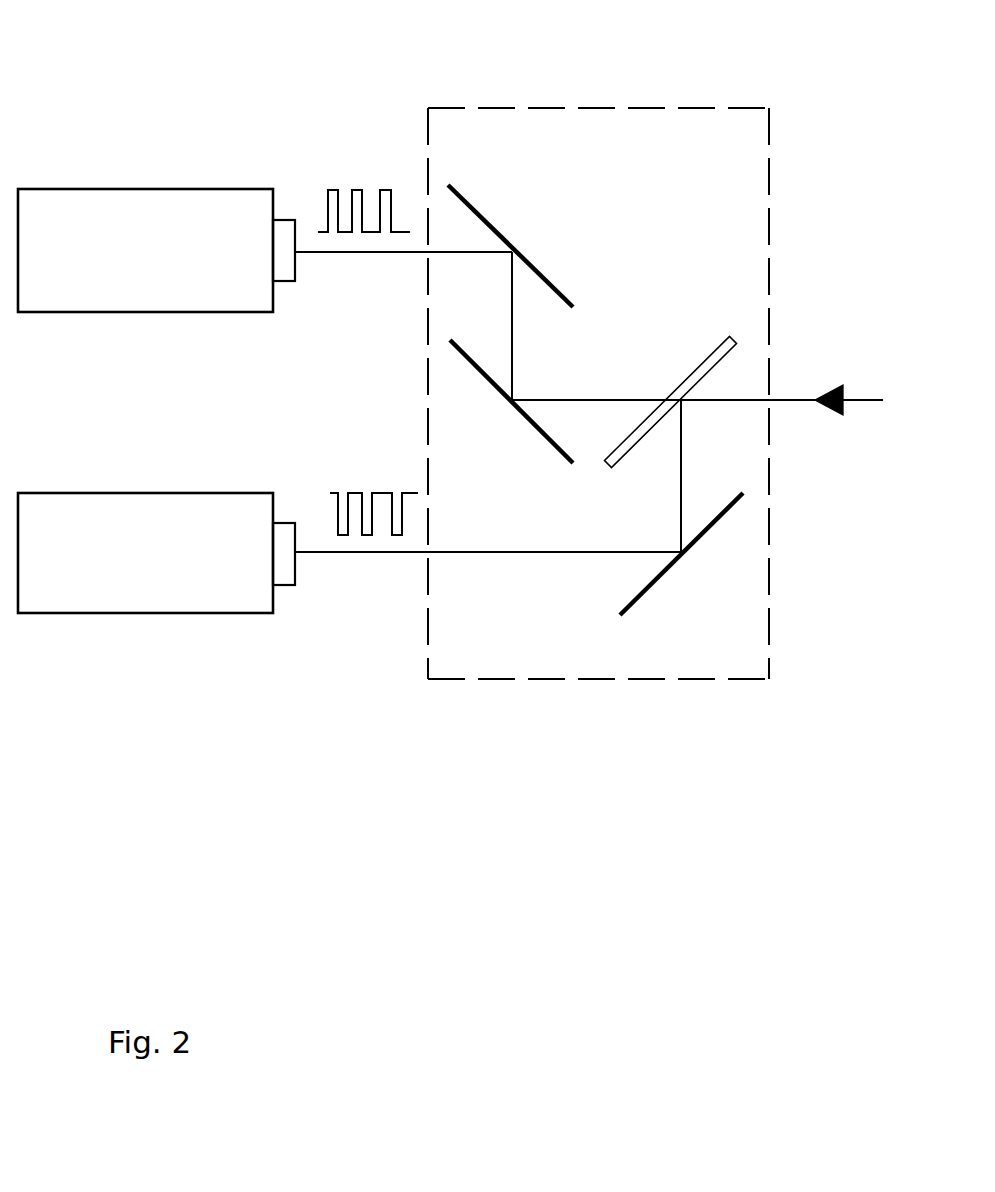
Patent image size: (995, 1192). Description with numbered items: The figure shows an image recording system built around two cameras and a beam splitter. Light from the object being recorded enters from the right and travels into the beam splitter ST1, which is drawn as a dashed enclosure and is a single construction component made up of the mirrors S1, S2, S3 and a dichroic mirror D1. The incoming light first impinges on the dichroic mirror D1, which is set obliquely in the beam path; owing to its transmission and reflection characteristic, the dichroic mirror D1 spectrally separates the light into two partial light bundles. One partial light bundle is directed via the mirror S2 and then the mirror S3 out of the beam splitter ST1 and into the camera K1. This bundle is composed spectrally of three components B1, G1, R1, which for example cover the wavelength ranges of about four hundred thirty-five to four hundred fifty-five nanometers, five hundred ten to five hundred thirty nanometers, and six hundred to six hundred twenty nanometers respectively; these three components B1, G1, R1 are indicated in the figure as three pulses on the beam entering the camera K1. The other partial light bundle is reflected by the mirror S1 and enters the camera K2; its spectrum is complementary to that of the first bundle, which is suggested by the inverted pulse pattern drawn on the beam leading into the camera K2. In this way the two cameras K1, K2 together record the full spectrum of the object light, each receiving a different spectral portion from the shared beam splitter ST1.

The camera K1 is at (156, 250).
The camera K2 is at (156, 553).
The blue spectral component B1 is at (330, 194).
The green spectral component G1 is at (360, 194).
The red spectral component R1 is at (390, 194).
The beam splitter ST1 is at (593, 103).
The mirror S1 is at (681, 554).
The mirror S2 is at (511, 401).
The mirror S3 is at (510, 246).
The dichroic mirror D1 is at (671, 402).